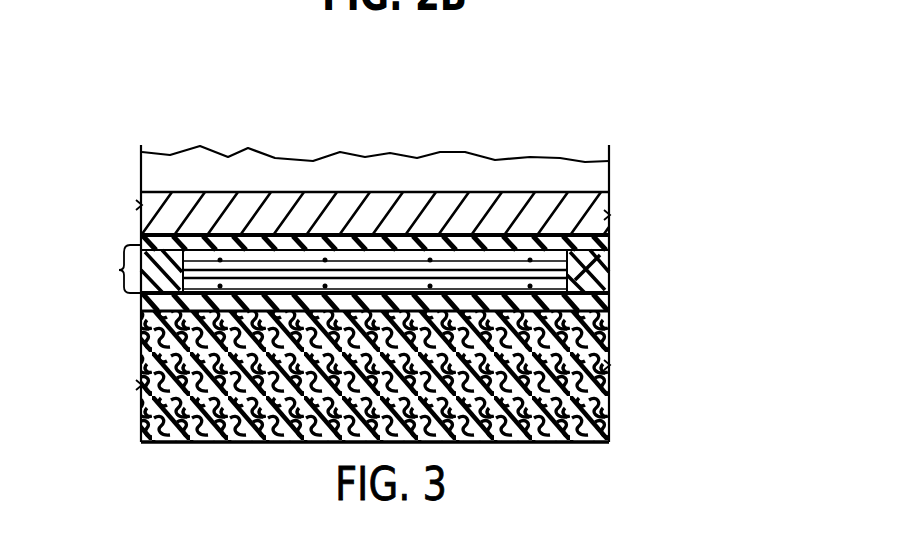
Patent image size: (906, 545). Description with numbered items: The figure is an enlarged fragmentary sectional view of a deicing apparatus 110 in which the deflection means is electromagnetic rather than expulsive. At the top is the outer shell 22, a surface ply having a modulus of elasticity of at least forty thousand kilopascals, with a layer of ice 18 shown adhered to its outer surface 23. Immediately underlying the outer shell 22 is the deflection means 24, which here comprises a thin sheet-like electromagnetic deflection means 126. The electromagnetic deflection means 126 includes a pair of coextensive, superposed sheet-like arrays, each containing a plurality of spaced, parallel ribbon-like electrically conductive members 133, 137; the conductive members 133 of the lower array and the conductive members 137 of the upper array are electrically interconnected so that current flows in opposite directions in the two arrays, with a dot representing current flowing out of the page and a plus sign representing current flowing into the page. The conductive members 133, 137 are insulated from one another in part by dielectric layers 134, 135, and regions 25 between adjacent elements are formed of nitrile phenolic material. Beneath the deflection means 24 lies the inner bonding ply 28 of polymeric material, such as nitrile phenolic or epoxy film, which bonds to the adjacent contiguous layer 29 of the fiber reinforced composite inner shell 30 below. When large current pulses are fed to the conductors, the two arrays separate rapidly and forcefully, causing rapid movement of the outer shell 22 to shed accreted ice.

The layer of ice 18 is at (336, 173).
The outer shell 22 is at (157, 210).
The outer surface 23 is at (570, 196).
The deflection means 24 is at (622, 240).
The regions 25 is at (612, 250).
The inner bonding ply 28 is at (141, 305).
The contiguous layer 29 is at (141, 318).
The inner shell 30 is at (141, 397).
The deicing apparatus 110 is at (627, 190).
The electromagnetic deflection means 126 is at (118, 270).
The electrically conductive members 133 is at (590, 295).
The dielectric layer 134 is at (278, 291).
The dielectric layer 135 is at (413, 257).
The electrically conductive members 137 is at (540, 262).